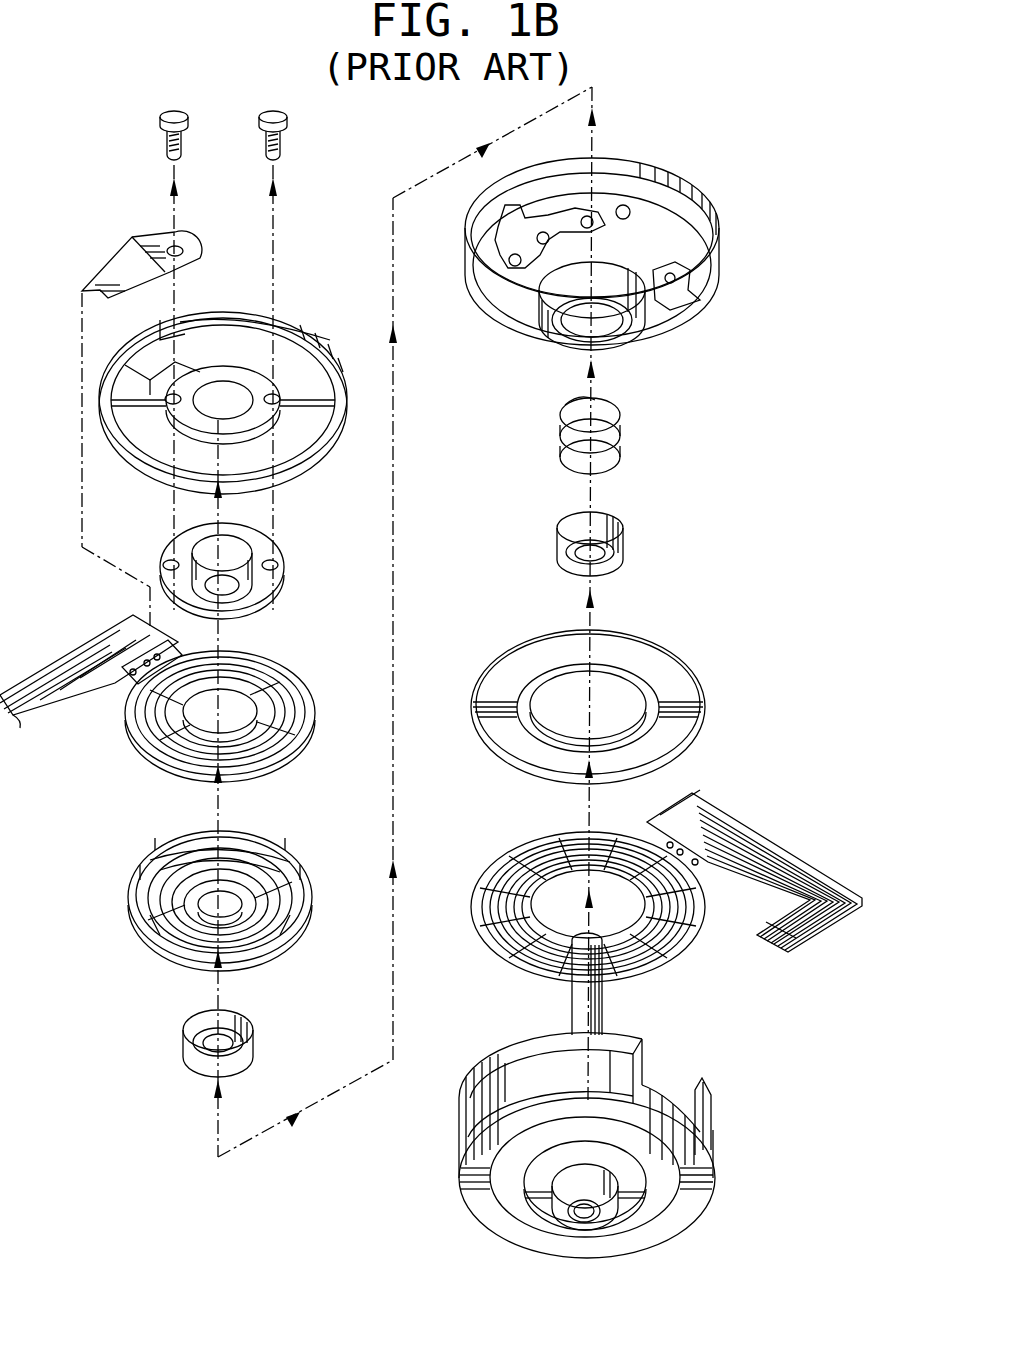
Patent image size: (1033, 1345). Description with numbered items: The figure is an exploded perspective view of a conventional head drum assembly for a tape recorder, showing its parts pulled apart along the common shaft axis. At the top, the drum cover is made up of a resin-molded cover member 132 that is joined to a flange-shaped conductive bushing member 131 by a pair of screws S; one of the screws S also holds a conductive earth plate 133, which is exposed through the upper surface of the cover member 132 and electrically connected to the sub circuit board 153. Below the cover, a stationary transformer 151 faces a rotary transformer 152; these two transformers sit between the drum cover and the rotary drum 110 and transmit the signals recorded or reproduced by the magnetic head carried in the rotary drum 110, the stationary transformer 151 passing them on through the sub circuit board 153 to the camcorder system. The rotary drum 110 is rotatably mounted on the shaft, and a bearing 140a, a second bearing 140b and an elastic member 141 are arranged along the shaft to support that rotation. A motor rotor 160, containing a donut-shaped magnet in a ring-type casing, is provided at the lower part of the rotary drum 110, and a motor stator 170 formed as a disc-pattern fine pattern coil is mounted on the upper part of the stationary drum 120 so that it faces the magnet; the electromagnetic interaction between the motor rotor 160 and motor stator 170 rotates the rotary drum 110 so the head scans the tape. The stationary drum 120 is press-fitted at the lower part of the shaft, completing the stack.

The screws S is at (160, 120).
The earth plate 133 is at (158, 240).
The cover member 132 is at (322, 308).
The bushing member 131 is at (283, 548).
The sub circuit board 153 is at (88, 632).
The stationary transformer 151 is at (295, 855).
The rotary transformer 152 is at (312, 918).
The bearing 140a is at (183, 1030).
The rotary drum 110 is at (722, 215).
The elastic member 141 is at (620, 448).
The bearing 140b is at (623, 560).
The motor rotor 160 is at (712, 680).
The motor stator 170 is at (688, 952).
The stationary drum 120 is at (722, 1138).